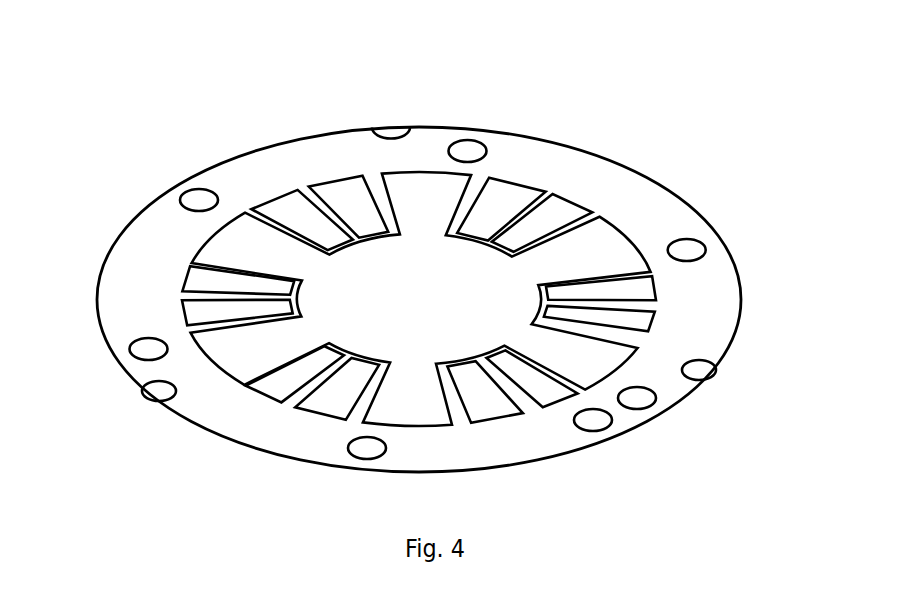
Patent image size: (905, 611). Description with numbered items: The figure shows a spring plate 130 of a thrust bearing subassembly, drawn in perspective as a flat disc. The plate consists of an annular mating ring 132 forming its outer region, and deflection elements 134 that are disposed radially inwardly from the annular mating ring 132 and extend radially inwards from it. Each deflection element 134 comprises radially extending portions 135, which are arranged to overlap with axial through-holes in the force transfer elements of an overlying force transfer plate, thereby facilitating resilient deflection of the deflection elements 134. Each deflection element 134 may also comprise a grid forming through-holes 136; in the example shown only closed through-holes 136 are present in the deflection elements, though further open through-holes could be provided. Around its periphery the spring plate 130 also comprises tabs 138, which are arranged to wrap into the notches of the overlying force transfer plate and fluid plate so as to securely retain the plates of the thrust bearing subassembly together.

The spring plate 130 is at (146, 139).
The annular mating ring 132 is at (522, 160).
The deflection element 134 is at (588, 267).
The radially extending portion 135 is at (335, 207).
The closed through-hole 136 is at (611, 318).
The tab 138 is at (147, 401).